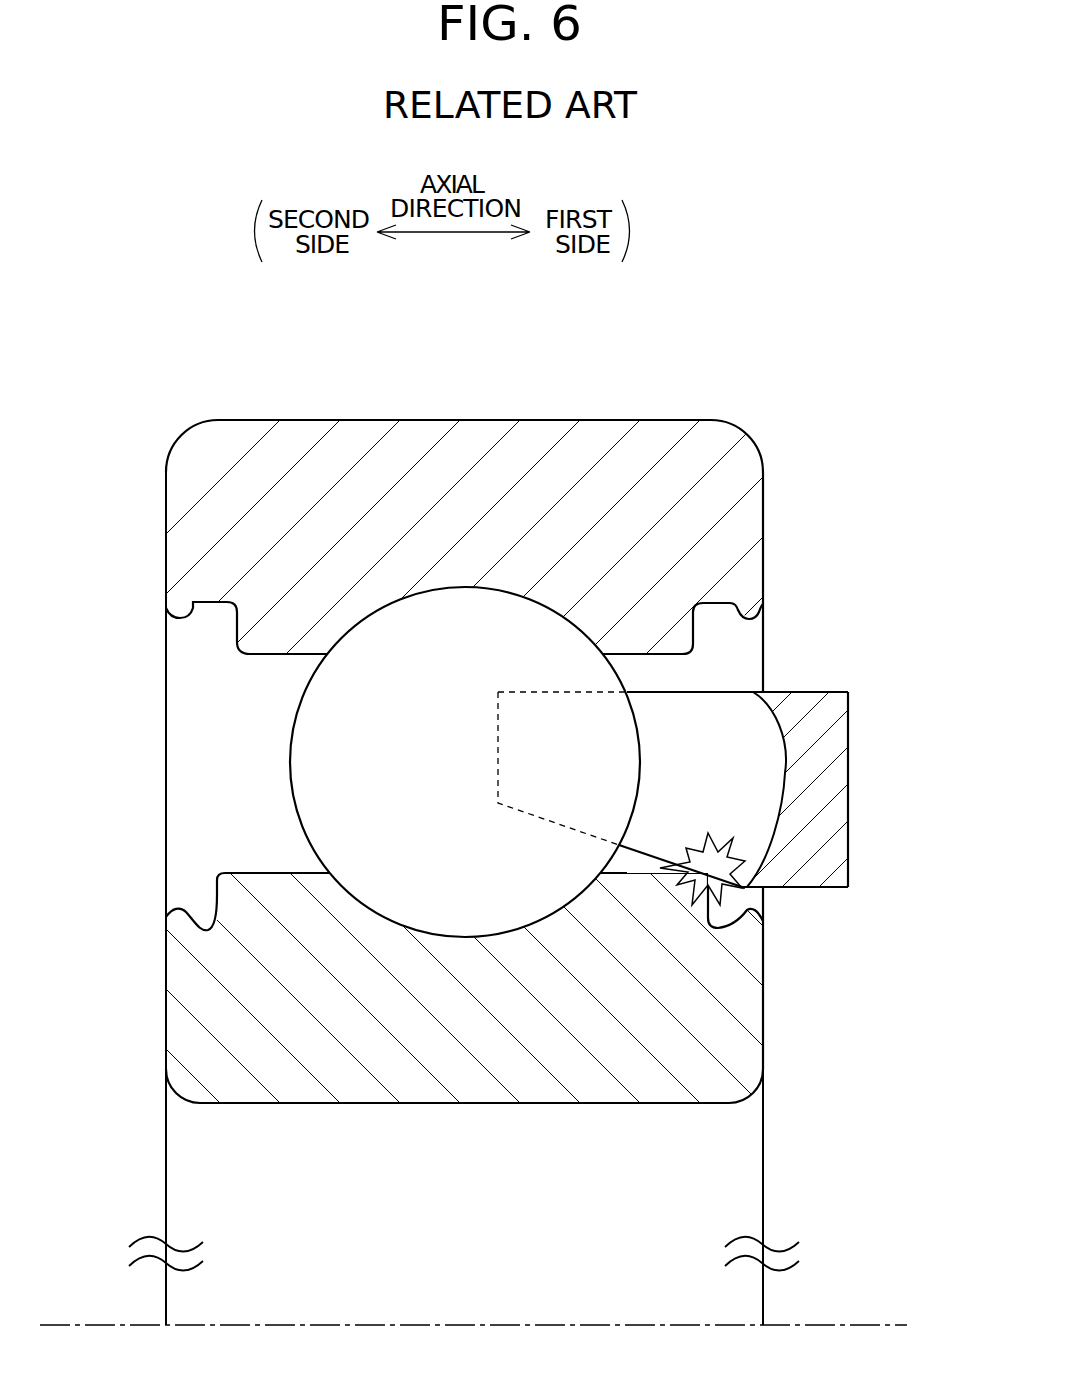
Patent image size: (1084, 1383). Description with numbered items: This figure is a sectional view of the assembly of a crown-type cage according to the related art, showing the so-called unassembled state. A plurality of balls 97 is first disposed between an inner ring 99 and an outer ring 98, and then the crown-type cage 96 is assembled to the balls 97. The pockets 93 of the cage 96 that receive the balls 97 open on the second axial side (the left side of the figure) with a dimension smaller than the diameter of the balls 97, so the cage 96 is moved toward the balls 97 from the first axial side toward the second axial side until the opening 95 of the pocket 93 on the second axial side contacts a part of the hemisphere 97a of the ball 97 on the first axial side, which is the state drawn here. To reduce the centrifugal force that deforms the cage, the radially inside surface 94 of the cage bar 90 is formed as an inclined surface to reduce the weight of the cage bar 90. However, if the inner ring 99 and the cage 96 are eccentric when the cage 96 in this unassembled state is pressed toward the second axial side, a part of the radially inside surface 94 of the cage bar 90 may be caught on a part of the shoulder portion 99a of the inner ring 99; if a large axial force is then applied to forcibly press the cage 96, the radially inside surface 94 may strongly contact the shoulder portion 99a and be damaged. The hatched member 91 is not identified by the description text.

The cage bar 90 is at (542, 691).
The seal member 91 is at (823, 723).
The pocket 93 is at (695, 737).
The radially inside surface 94 is at (638, 852).
The opening 95 is at (497, 765).
The crown-type cage 96 is at (872, 781).
The ball 97 is at (290, 742).
The hemisphere 97a is at (498, 747).
The outer ring 98 is at (166, 518).
The inner ring 99 is at (542, 691).
The shoulder portion 99a is at (653, 892).